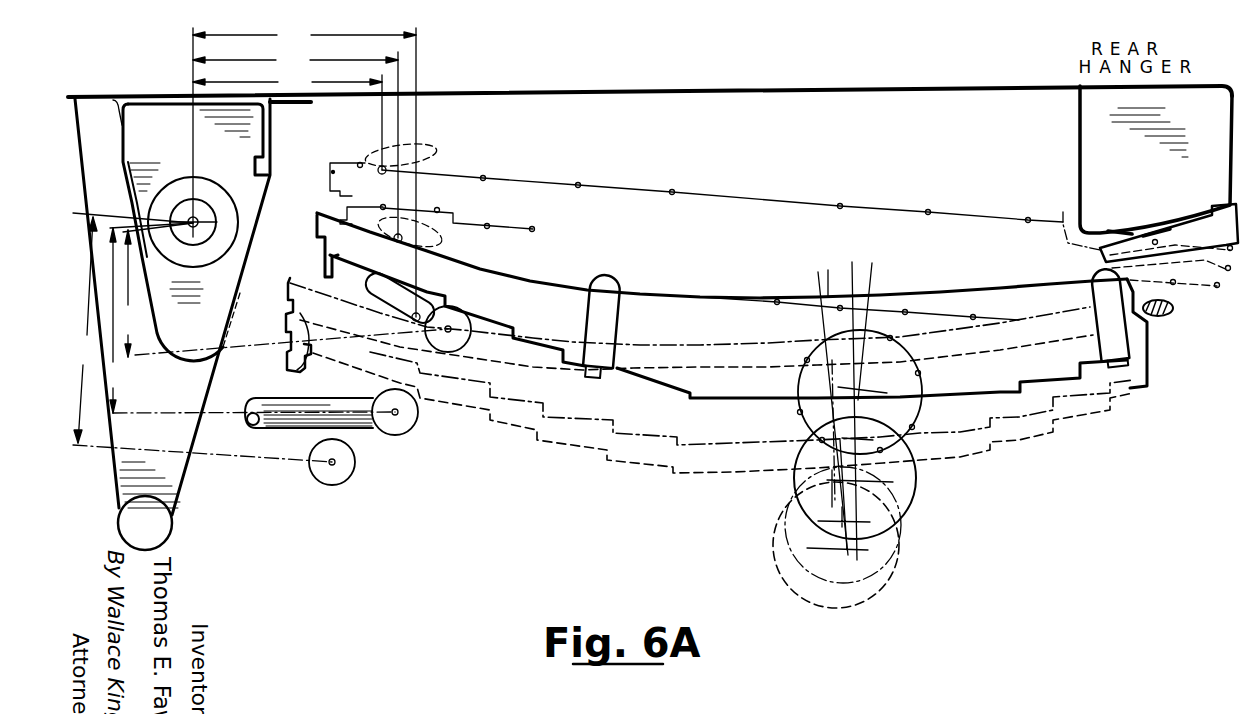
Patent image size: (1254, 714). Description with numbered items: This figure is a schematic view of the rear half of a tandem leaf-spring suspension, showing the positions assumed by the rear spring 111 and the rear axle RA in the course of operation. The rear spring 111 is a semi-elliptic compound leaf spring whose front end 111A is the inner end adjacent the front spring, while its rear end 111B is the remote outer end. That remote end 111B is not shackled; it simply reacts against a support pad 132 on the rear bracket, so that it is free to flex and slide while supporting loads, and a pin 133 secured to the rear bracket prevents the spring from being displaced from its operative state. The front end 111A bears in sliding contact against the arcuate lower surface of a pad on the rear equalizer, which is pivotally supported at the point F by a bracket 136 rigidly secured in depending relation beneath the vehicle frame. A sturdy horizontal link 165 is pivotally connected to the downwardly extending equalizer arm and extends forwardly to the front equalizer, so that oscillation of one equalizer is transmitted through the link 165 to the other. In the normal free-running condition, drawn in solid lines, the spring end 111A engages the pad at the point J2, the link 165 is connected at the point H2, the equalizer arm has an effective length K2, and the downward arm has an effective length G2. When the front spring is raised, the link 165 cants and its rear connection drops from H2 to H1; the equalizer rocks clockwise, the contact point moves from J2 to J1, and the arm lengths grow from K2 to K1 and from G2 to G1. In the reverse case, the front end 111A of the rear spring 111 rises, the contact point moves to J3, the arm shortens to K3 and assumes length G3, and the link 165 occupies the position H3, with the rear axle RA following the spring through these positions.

The bracket 136 is at (175, 142).
The pivot point of the rear equalizer F is at (200, 217).
The lengthened effective length of rear equalizer arm K1 is at (304, 171).
The normal effective length of rear equalizer arm K2 is at (295, 144).
The shortened effective length of rear equalizer arm K3 is at (287, 121).
The lengthened effective length of rear equalizer arm G1 is at (201, 337).
The normal effective length of rear equalizer arm G2 is at (252, 318).
The effective length of rear equalizer arm G3 is at (285, 290).
The equalizer link 165 is at (271, 410).
The lowered link pivot position H1 is at (332, 463).
The normal link pivot position H2 is at (395, 413).
The raised link pivot position H3 is at (448, 329).
The front end of the rear spring 111A is at (323, 204).
The shifted contact point J1 is at (400, 304).
The normal contact point J2 is at (437, 235).
The raised contact point J3 is at (696, 181).
The rear spring 111 is at (667, 293).
The rear axle RA is at (928, 377).
The support pad 132 is at (1132, 229).
The rear end of the rear spring 111B is at (1147, 233).
The pin 133 is at (1167, 317).